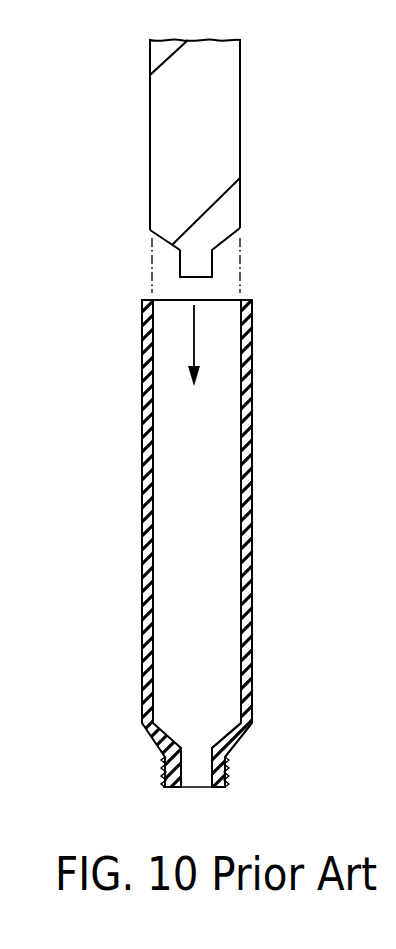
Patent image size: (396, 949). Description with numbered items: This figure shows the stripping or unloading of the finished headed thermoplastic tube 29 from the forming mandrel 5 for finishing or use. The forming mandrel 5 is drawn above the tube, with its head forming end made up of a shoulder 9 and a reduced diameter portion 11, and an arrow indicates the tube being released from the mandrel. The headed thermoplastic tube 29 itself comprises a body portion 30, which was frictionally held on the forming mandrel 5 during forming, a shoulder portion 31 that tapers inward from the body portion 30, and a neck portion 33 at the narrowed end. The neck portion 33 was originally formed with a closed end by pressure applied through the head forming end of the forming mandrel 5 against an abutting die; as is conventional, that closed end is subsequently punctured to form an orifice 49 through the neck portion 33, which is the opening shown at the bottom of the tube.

The forming mandrel 5 is at (232, 107).
The shoulder 9 is at (165, 245).
The reduced diameter portion 11 is at (213, 272).
The headed thermoplastic tube 29 is at (260, 472).
The body portion 30 is at (253, 518).
The shoulder portion 31 is at (242, 738).
The neck portion 33 is at (165, 777).
The orifice 49 is at (218, 797).